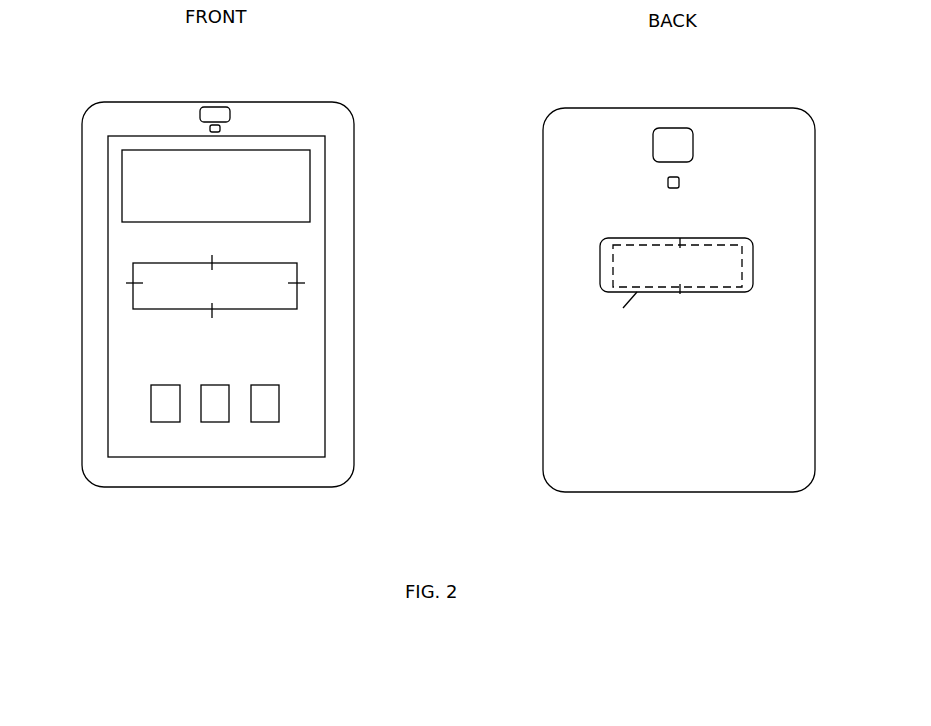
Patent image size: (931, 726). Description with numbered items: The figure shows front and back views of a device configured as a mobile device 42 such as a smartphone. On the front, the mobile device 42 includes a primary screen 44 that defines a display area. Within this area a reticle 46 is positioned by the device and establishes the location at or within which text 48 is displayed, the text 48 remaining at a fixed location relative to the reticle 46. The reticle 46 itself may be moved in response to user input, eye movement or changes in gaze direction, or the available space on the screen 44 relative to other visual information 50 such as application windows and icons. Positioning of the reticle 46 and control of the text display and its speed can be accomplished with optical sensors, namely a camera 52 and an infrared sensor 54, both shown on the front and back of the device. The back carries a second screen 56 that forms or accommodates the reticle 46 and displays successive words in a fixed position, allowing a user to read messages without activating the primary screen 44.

The mobile device 42 is at (80, 132).
The screen 44 is at (317, 238).
The reticle 46 is at (170, 298).
The text 48 is at (250, 272).
The other visual information 50 is at (135, 190).
The camera 52 is at (228, 103).
The infrared sensor 54 is at (210, 128).
The second screen 56 is at (693, 292).